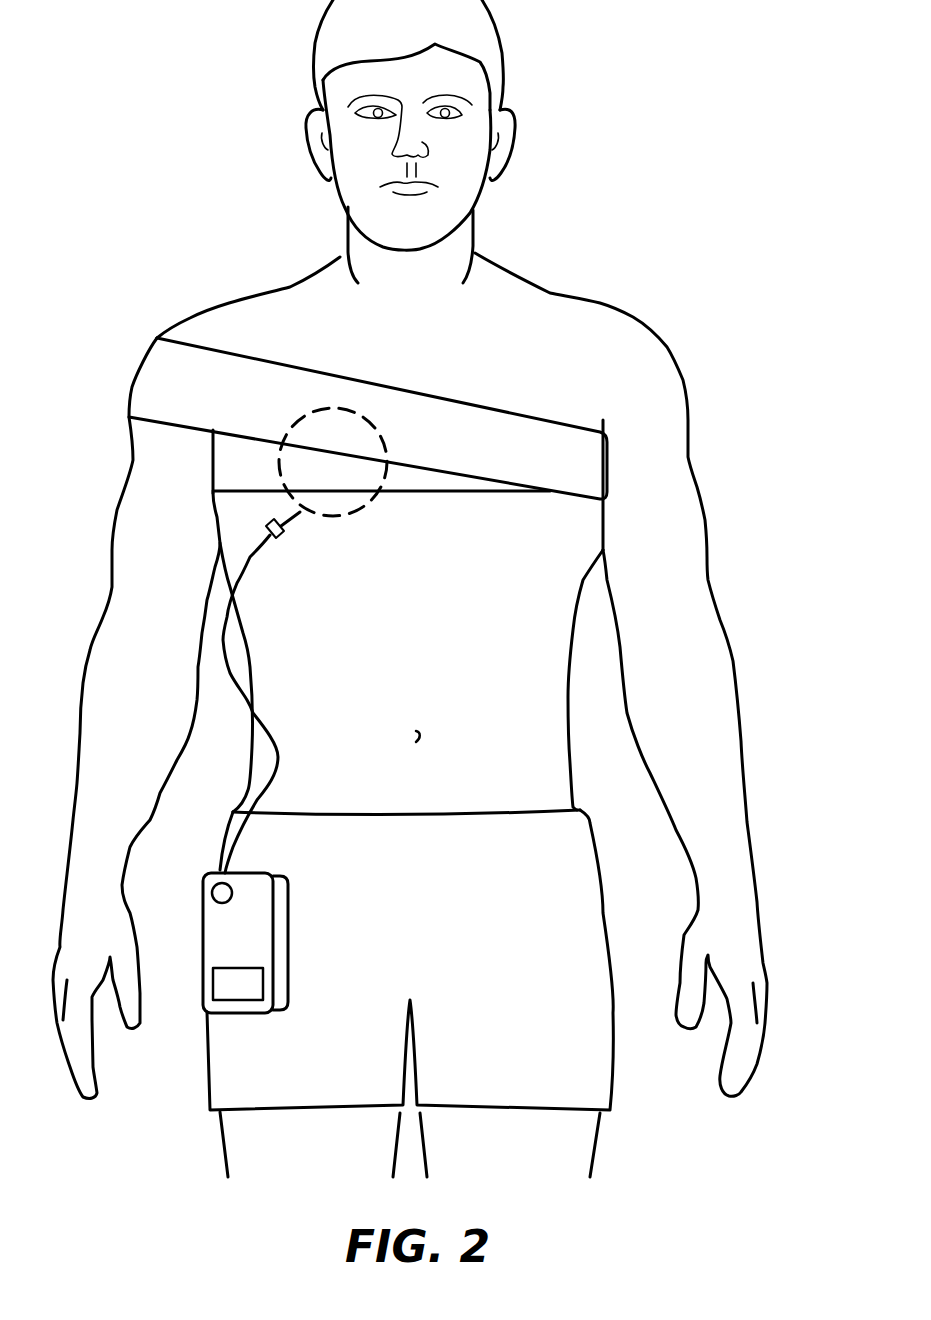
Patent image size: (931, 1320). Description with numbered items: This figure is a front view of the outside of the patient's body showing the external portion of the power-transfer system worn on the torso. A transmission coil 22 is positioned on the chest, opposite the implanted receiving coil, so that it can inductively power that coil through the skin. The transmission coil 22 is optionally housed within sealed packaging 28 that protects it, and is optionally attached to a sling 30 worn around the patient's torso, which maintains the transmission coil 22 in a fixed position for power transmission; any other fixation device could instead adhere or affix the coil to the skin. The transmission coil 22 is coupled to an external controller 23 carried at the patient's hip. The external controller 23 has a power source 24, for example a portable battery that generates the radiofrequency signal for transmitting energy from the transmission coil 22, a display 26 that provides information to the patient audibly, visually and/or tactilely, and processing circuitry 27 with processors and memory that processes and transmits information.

The transmission coil 22 is at (342, 430).
The sealed packaging 28 is at (333, 493).
The sling 30 is at (233, 383).
The power source 24 is at (254, 957).
The external controller 23 is at (277, 877).
The processing circuitry 27 is at (228, 900).
The display 26 is at (243, 985).